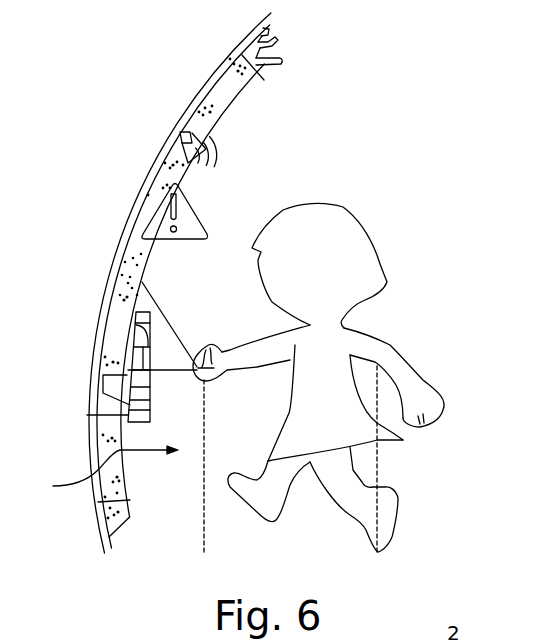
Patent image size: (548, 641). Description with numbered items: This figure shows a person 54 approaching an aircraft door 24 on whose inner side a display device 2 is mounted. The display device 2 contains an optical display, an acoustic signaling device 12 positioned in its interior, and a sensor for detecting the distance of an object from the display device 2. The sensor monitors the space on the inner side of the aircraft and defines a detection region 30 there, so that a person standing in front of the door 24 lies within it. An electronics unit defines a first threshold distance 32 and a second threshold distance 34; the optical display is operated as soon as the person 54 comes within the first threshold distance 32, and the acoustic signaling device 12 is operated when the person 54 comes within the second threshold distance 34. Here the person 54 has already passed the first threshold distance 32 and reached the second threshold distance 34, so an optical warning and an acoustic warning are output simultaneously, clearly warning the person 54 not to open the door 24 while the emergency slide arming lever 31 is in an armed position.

The display device 2 is at (142, 310).
The acoustic signaling device 12 is at (180, 135).
The door 24 is at (223, 69).
The detection region 30 is at (101, 471).
The emergency slide arming lever 31 is at (143, 250).
The first threshold distance 32 is at (379, 477).
The second threshold distance 34 is at (209, 481).
The person 54 is at (347, 250).